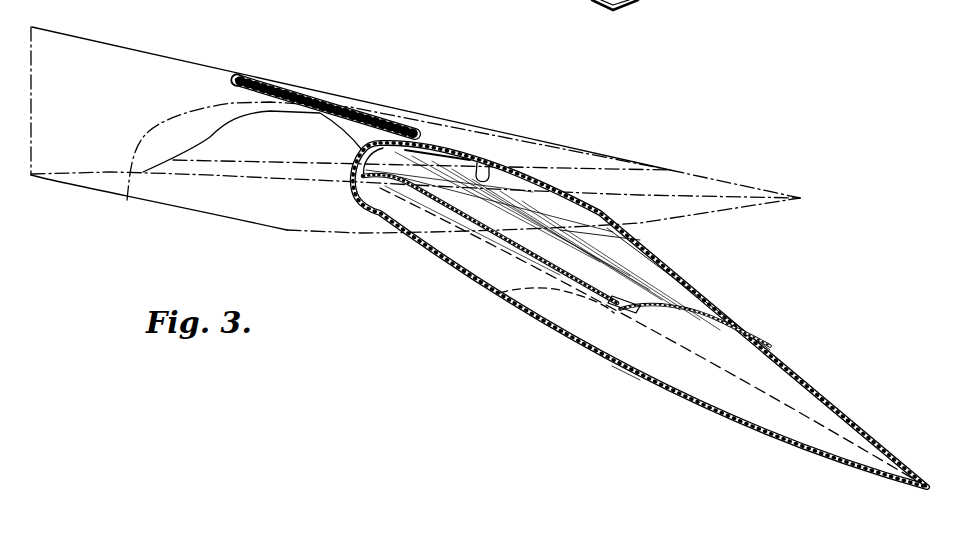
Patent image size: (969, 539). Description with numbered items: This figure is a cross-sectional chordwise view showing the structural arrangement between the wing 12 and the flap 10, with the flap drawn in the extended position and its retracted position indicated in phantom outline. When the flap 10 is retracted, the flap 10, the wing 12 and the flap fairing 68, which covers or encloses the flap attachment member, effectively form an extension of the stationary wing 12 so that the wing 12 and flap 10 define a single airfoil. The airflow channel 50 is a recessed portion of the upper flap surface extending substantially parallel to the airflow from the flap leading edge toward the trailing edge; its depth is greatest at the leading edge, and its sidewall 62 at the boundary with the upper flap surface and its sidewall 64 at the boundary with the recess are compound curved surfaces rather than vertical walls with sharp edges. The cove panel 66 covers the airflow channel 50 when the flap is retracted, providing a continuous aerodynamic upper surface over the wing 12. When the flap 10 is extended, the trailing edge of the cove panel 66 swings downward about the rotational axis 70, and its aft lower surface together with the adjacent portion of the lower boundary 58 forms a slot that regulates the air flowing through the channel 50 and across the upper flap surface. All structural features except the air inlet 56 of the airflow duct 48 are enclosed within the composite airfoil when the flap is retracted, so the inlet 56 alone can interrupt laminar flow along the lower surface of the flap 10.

The flap 10 is at (712, 296).
The wing 12 is at (88, 41).
The airflow duct 48 is at (576, 318).
The airflow channel 50 is at (366, 148).
The air inlet 56 is at (538, 329).
The lower boundary 58 is at (485, 168).
The sidewall 62 is at (419, 150).
The sidewall 64 is at (598, 238).
The cove panel 66 is at (322, 102).
The flap fairing 68 is at (297, 222).
The rotational axis 70 is at (237, 74).